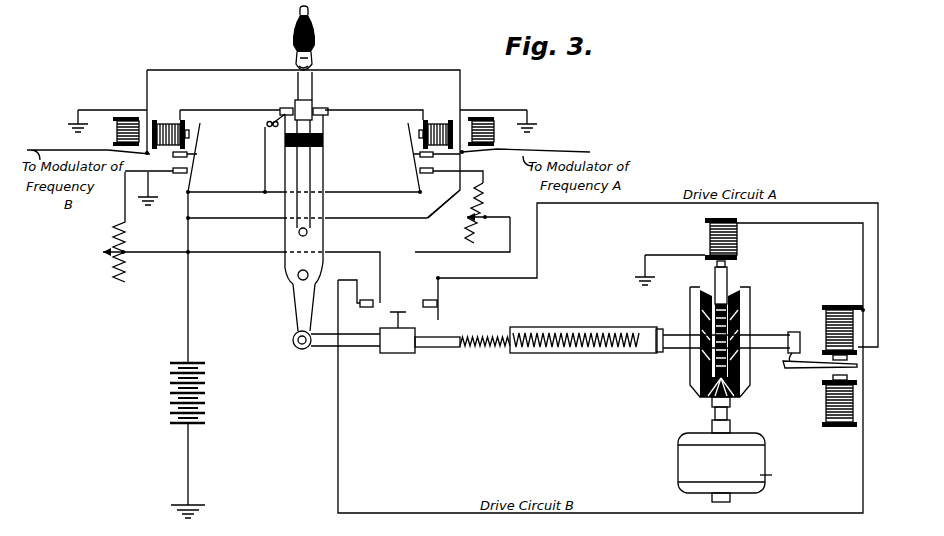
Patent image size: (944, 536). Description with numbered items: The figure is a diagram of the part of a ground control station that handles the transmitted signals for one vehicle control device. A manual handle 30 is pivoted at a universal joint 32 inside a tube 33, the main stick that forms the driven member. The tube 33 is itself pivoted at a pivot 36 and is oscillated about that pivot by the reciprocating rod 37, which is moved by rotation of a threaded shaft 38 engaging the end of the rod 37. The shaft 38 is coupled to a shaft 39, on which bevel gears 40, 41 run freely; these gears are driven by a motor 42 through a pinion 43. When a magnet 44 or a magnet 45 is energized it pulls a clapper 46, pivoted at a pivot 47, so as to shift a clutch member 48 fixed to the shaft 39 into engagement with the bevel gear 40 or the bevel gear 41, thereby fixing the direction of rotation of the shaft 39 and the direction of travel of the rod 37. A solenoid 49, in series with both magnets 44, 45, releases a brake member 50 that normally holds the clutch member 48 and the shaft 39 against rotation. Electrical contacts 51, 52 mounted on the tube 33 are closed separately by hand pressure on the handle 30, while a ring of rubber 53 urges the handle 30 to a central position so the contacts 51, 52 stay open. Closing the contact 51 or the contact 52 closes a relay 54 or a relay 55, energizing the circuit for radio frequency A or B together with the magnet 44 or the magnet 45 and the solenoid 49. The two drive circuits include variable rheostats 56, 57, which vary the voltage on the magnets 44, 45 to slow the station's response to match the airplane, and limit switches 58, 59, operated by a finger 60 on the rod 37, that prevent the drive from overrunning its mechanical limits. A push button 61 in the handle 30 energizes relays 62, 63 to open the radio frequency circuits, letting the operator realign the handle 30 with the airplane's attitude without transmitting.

The handle 30 is at (320, 33).
The universal joint 32 is at (308, 232).
The tube 33 is at (283, 268).
The pivot 36 is at (293, 290).
The rod 37 is at (322, 352).
The shaft 38 is at (545, 355).
The shaft 39 is at (672, 355).
The bevel gear 40 is at (690, 307).
The bevel gear 41 is at (750, 304).
The motor 42 is at (678, 469).
The pinion 43 is at (703, 402).
The magnet 44 is at (838, 305).
The magnet 45 is at (840, 427).
The clapper 46 is at (810, 372).
The pivot 47 is at (787, 370).
The clutch member 48 is at (740, 293).
The solenoid 49 is at (737, 240).
The brake member 50 is at (715, 276).
The electrical contact 51 is at (330, 110).
The electrical contact 52 is at (283, 108).
The ring of rubber 53 is at (323, 140).
The relay 54 is at (443, 119).
The relay 55 is at (170, 119).
The variable rheostat 56 is at (462, 233).
The variable rheostat 57 is at (102, 266).
The limit switch 58 is at (440, 303).
The limit switch 59 is at (368, 307).
The finger 60 is at (401, 318).
The push button 61 is at (313, 12).
The relay 62 is at (480, 117).
The relay 63 is at (128, 117).